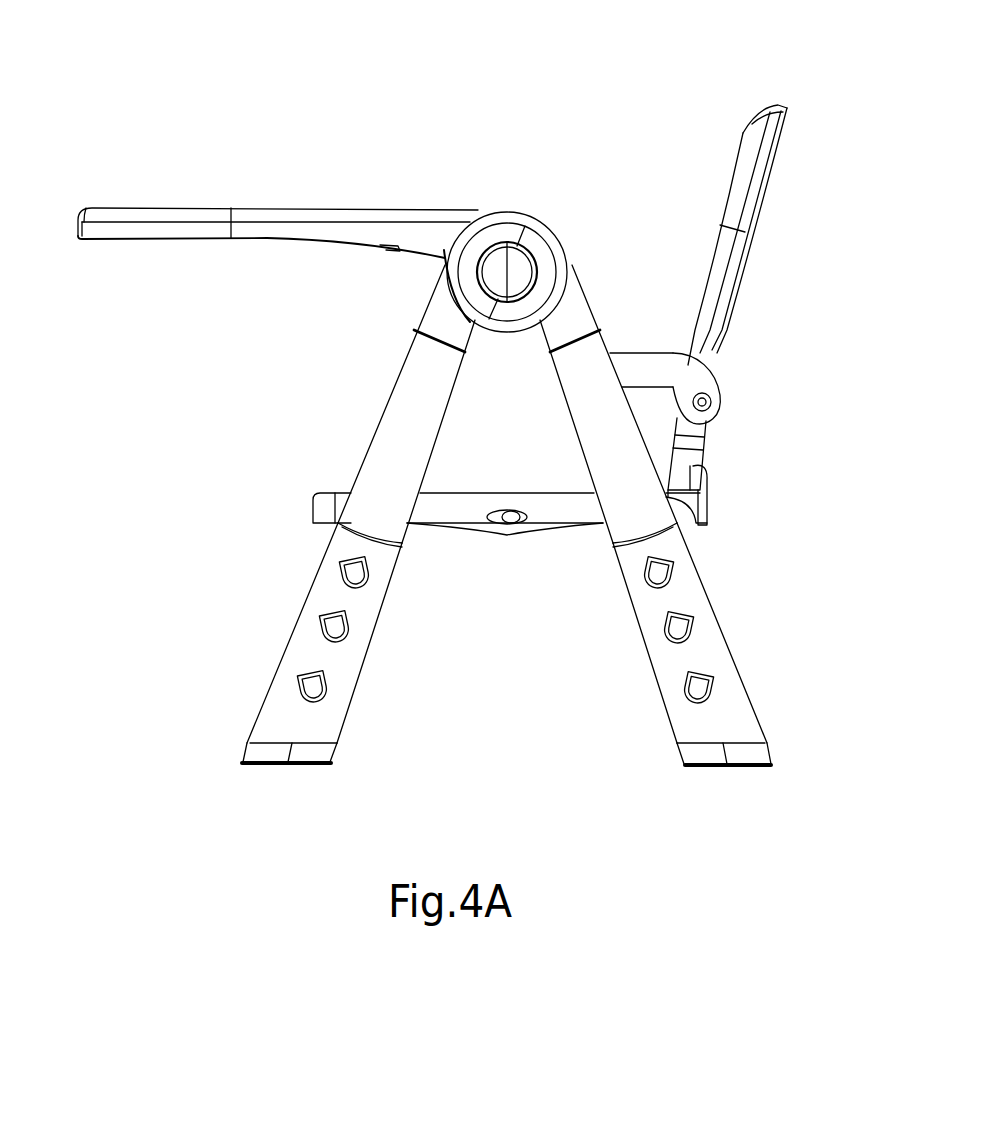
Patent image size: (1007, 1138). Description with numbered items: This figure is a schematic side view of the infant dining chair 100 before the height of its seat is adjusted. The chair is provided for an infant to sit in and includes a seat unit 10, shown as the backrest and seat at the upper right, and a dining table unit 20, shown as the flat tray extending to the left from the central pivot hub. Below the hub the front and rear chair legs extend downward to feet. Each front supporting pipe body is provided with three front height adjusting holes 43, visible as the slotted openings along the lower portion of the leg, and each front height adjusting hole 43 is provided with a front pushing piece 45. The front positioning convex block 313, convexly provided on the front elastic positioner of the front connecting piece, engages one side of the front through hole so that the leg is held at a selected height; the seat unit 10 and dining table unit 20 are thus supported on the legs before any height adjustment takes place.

The infant dining chair 100 is at (408, 113).
The seat unit 10 is at (742, 136).
The dining table unit 20 is at (134, 198).
The front positioning convex block 313 is at (710, 694).
The front height adjusting hole 43 is at (670, 566).
The front pushing piece 45 is at (671, 584).